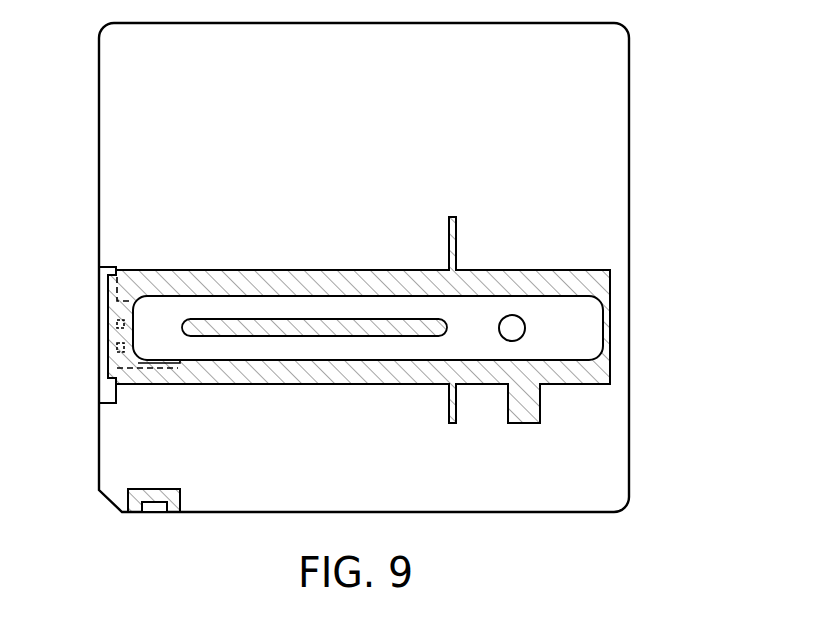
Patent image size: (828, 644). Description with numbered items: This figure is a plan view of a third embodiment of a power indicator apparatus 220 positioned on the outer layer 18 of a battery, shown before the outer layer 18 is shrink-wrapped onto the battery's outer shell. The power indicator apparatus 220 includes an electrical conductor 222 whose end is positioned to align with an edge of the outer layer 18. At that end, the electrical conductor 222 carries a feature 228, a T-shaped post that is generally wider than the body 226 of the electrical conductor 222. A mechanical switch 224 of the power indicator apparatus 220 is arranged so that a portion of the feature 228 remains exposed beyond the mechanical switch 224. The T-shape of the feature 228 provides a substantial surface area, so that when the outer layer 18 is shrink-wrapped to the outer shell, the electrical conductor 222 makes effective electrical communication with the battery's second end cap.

The outer layer 18 is at (110, 163).
The power indicator apparatus 220 is at (622, 296).
The electrical conductor 222 is at (217, 305).
The mechanical switch 224 is at (333, 278).
The body 226 is at (127, 360).
The feature 228 is at (118, 350).